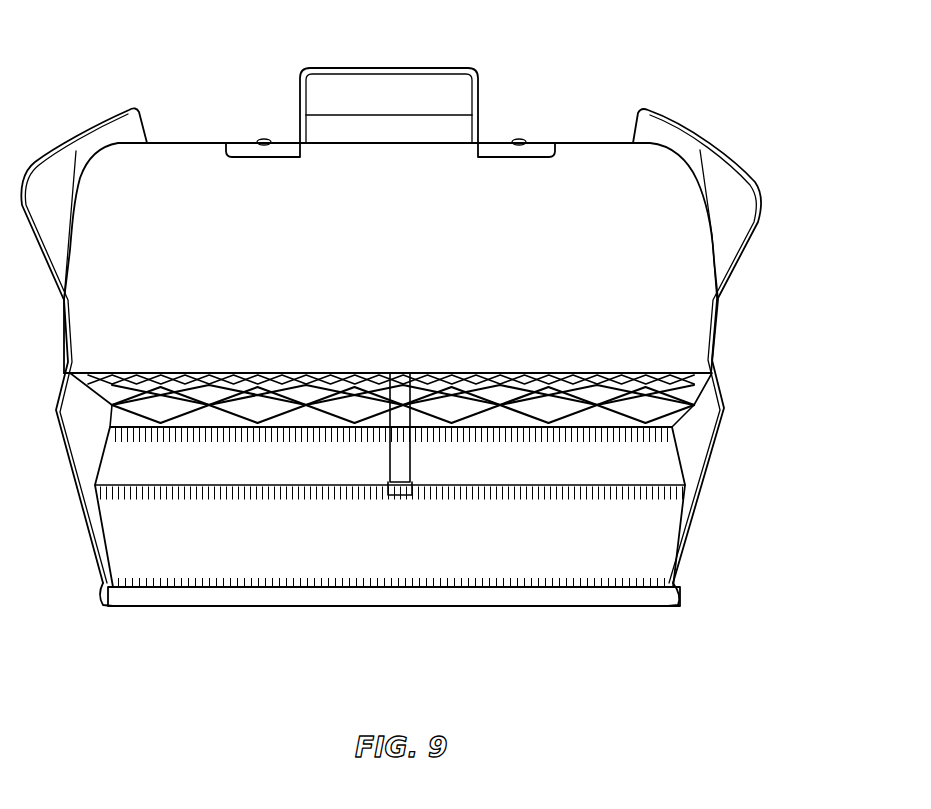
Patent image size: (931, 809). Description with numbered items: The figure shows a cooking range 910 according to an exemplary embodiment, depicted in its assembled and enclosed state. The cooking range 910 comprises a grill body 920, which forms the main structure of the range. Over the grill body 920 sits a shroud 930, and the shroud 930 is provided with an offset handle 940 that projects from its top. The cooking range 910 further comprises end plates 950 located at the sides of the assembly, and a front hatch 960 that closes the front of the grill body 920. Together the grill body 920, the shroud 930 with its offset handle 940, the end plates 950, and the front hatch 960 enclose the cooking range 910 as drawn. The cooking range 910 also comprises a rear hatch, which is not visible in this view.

The cooking range 910 is at (411, 312).
The grill body 920 is at (718, 440).
The shroud 930 is at (430, 252).
The offset handle 940 is at (356, 88).
The end plates 950 is at (133, 130).
The front hatch 960 is at (348, 558).